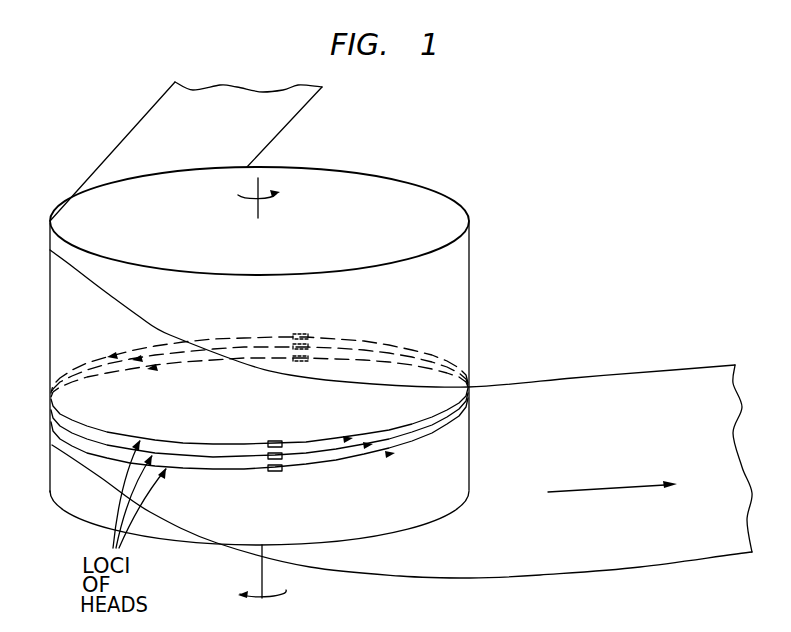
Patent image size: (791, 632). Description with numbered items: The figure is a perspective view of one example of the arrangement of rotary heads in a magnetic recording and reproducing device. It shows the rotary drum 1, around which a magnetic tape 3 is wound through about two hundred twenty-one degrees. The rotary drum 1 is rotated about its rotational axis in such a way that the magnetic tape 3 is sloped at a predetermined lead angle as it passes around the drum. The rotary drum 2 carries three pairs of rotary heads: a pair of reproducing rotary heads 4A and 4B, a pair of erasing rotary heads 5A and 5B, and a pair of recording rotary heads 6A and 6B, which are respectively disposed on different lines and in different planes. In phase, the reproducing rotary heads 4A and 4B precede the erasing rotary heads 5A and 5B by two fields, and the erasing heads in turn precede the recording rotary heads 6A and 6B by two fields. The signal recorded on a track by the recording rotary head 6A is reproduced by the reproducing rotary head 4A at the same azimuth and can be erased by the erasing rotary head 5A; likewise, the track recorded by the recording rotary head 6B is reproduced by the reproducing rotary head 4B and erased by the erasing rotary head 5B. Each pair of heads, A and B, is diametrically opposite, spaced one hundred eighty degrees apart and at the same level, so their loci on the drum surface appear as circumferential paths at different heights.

The rotary drum 1 is at (435, 212).
The rotary drum 2 is at (260, 572).
The magnetic tape 3 is at (587, 560).
The reproducing rotary head 4A is at (271, 440).
The erasing rotary head 5A is at (283, 456).
The recording rotary head 6A is at (282, 471).
The reproducing rotary head 4B is at (297, 333).
The erasing rotary head 5B is at (312, 346).
The recording rotary head 6B is at (294, 360).